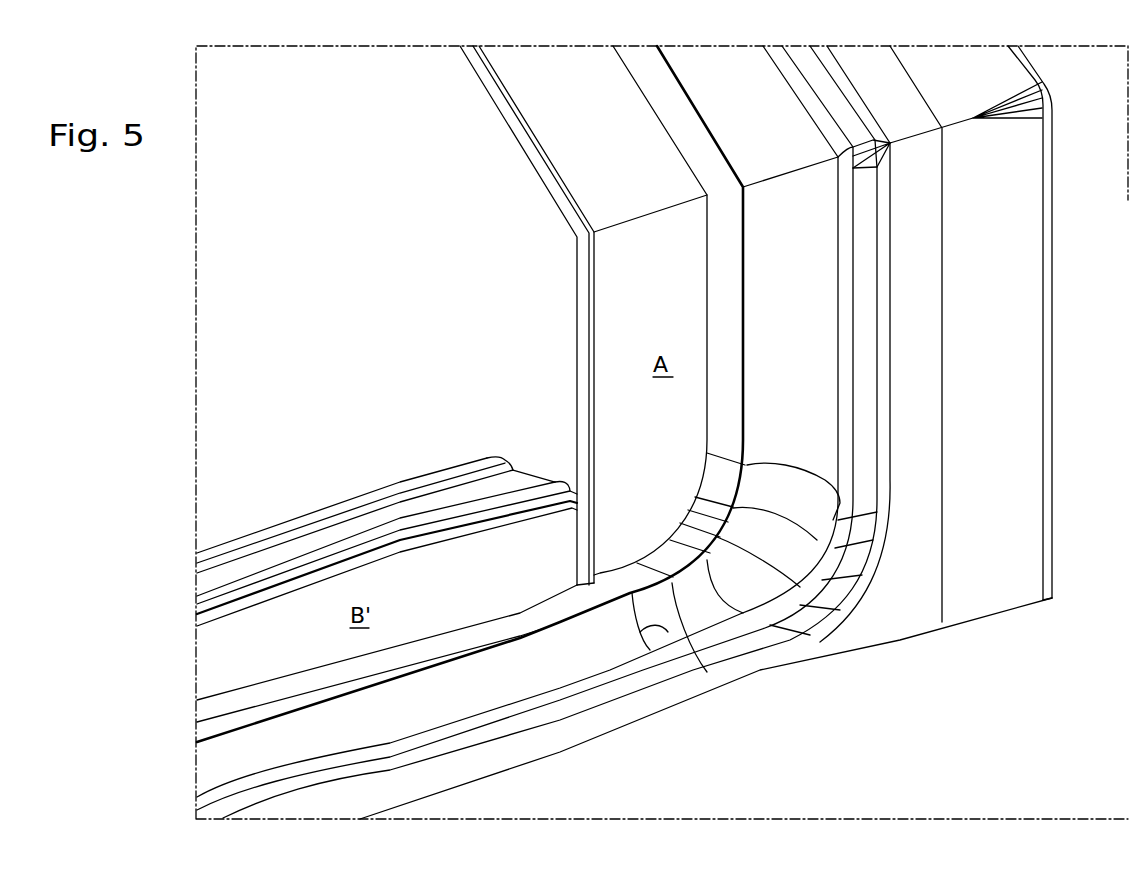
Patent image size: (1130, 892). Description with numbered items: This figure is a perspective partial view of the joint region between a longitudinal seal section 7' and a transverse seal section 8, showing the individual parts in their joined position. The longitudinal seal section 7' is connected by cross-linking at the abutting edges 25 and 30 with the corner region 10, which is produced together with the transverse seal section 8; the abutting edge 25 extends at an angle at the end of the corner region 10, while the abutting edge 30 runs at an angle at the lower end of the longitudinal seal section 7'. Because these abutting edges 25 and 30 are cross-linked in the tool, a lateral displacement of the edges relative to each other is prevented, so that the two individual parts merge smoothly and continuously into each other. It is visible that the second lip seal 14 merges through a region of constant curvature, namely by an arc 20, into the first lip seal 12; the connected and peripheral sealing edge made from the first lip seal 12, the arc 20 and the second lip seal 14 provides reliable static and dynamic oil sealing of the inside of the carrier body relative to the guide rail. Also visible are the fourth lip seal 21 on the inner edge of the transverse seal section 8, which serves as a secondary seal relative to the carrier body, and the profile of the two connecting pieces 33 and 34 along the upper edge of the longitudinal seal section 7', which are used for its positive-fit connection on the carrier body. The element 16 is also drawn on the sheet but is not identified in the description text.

The longitudinal seal section 7' is at (387, 538).
The transverse seal section 8 is at (1058, 157).
The corner region 10 is at (910, 620).
The first lip seal 12 is at (662, 700).
The second lip seal 14 is at (863, 308).
The outer panel 16 is at (1020, 372).
The arc 20 is at (853, 568).
The fourth lip seal 21 is at (581, 304).
The abutting edge 25 is at (733, 697).
The abutting edge 30 is at (762, 650).
The connecting piece 33 is at (503, 465).
The connecting piece 34 is at (558, 478).